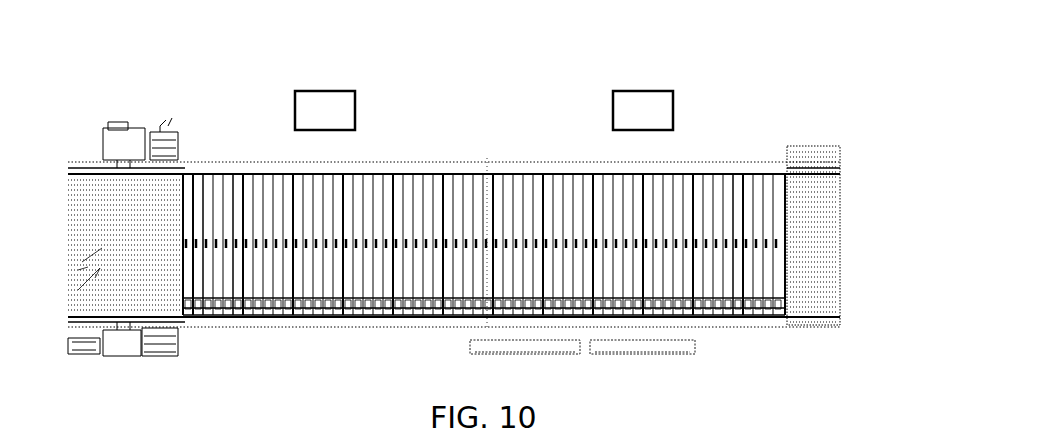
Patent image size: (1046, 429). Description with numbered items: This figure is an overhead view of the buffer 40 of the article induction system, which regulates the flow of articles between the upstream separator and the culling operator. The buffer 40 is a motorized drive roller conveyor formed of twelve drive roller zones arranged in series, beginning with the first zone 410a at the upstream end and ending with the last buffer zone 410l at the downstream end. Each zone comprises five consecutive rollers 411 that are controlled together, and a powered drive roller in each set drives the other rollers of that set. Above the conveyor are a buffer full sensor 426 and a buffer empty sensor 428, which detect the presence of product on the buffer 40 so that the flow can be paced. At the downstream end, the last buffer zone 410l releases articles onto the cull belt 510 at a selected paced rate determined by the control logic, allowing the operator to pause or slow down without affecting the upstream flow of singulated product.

The buffer 40 is at (463, 118).
The rollers 411 is at (212, 182).
The buffer full sensor 426 is at (338, 107).
The buffer empty sensor 428 is at (669, 99).
The cull belt 510 is at (827, 157).
The first drive roller zone 410a is at (240, 334).
The last buffer zone 410l is at (787, 332).